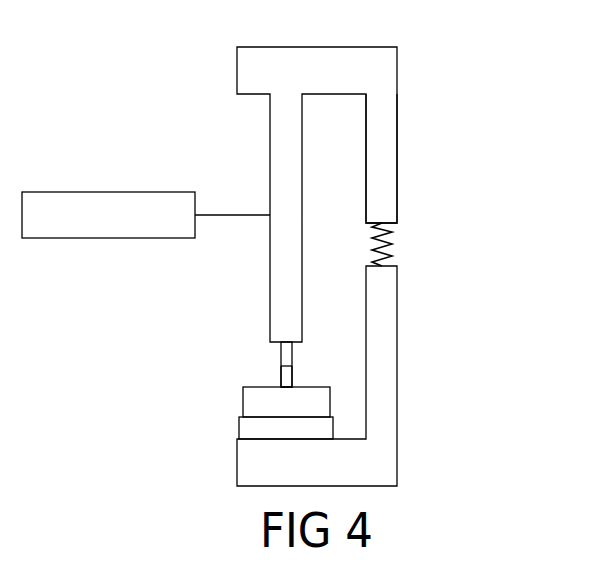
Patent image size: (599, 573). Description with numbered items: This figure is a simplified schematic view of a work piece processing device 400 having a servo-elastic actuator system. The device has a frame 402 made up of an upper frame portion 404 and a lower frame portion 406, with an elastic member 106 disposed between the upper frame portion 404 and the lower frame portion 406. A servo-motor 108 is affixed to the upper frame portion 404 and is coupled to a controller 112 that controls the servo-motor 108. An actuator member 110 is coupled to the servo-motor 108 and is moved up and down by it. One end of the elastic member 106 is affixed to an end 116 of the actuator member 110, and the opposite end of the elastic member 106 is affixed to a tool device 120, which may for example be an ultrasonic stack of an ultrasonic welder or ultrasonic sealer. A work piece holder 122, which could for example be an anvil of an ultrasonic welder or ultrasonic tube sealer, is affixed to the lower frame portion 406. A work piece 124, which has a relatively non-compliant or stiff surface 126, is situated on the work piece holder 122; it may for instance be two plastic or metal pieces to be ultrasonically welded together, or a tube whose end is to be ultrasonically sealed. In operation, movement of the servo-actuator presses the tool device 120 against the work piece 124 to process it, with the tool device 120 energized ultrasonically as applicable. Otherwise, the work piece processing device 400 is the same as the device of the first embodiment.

The work piece processing device 400 is at (426, 70).
The frame 402 is at (432, 268).
The upper frame portion 404 is at (398, 170).
The lower frame portion 406 is at (390, 362).
The elastic member 106 is at (404, 243).
The servo-motor 108 is at (270, 153).
The actuator member 110 is at (281, 352).
The controller 112 is at (108, 238).
The end of actuator member 116 is at (292, 366).
The tool device 120 is at (281, 376).
The work piece holder 122 is at (237, 429).
The work piece 124 is at (230, 403).
The non-compliant surface 126 is at (300, 387).